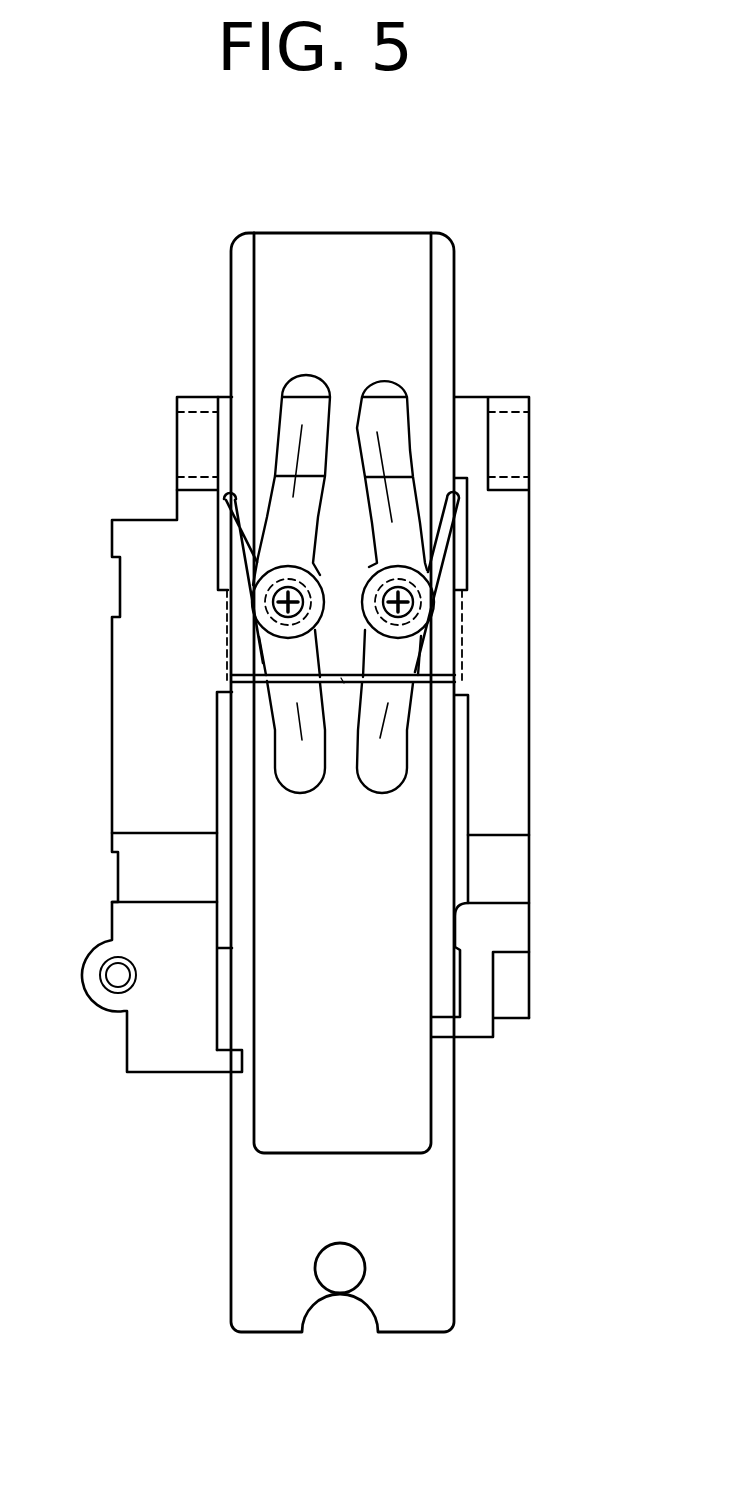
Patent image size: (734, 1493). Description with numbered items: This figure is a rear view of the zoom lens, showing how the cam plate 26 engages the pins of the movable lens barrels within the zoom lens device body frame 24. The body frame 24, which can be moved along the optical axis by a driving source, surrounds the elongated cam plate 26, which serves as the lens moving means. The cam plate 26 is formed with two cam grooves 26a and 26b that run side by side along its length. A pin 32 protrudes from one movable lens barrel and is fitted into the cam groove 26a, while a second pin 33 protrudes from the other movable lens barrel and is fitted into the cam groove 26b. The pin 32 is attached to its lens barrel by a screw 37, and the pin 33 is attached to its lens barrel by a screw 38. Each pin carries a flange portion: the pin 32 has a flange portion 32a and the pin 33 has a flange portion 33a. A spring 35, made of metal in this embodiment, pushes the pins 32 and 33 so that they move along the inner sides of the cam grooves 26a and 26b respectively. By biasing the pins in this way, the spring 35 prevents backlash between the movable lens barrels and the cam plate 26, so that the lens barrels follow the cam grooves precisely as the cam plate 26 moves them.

The zoom lens device body frame 24 is at (522, 563).
The cam plate 26 is at (382, 243).
The cam groove 26a is at (382, 388).
The cam groove 26b is at (296, 382).
The pin 32 is at (410, 647).
The flange portion 32a is at (398, 568).
The pin 33 is at (262, 637).
The flange portion 33a is at (293, 568).
The spring 35 is at (344, 683).
The screw 37 is at (390, 622).
The screw 38 is at (268, 563).